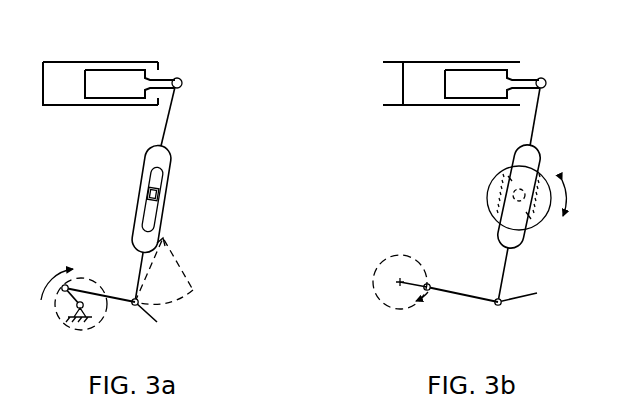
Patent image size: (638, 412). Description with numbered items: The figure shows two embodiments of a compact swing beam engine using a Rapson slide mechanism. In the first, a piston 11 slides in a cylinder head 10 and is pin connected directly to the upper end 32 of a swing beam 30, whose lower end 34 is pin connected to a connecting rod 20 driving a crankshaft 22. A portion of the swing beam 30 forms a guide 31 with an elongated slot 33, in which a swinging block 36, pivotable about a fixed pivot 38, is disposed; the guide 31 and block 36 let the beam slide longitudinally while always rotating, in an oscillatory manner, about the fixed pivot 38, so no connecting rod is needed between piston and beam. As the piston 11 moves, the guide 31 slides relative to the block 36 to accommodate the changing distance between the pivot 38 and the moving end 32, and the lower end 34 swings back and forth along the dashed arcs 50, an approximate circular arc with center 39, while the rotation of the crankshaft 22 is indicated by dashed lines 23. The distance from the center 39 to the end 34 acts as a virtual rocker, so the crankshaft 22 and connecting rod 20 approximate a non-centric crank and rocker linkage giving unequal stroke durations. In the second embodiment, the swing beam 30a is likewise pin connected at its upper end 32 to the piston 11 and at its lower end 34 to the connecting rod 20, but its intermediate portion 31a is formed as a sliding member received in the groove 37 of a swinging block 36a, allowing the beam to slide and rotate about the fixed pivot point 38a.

In FIG. 3a, the cylinder head 10 is at (80, 62).
In FIG. 3b, the cylinder head 10 is at (415, 62).
In FIG. 3a, the piston 11 is at (118, 72).
In FIG. 3b, the piston 11 is at (467, 72).
In FIG. 3a, the end of swing beam 32 is at (181, 78).
In FIG. 3b, the end of swing beam 32 is at (545, 78).
In FIG. 3a, the swing beam 30 is at (176, 120).
In FIG. 3b, the swing beam 30a is at (536, 116).
In FIG. 3a, the guide 31 is at (149, 157).
In FIG. 3b, the portion formed as sliding member 31a is at (540, 150).
In FIG. 3a, the elongated slot 33 is at (162, 172).
In FIG. 3a, the swinging block 36 is at (163, 197).
In FIG. 3b, the swinging block 36a is at (495, 178).
In FIG. 3b, the groove 37 is at (510, 208).
In FIG. 3a, the fixed pivot 38 is at (150, 198).
In FIG. 3b, the fixed pivot point 38a is at (532, 215).
In FIG. 3a, the center of circular arc 39 is at (166, 237).
In FIG. 3a, the dashed arcs 50 is at (170, 303).
In FIG. 3a, the lower end of swing beam 34 is at (150, 300).
In FIG. 3b, the lower end of swing beam 34 is at (535, 278).
In FIG. 3a, the connecting rod 20 is at (122, 297).
In FIG. 3b, the connecting rod 20 is at (465, 295).
In FIG. 3a, the crankshaft 22 is at (64, 292).
In FIG. 3b, the crankshaft 22 is at (404, 283).
In FIG. 3a, the dashed lines 23 is at (99, 322).